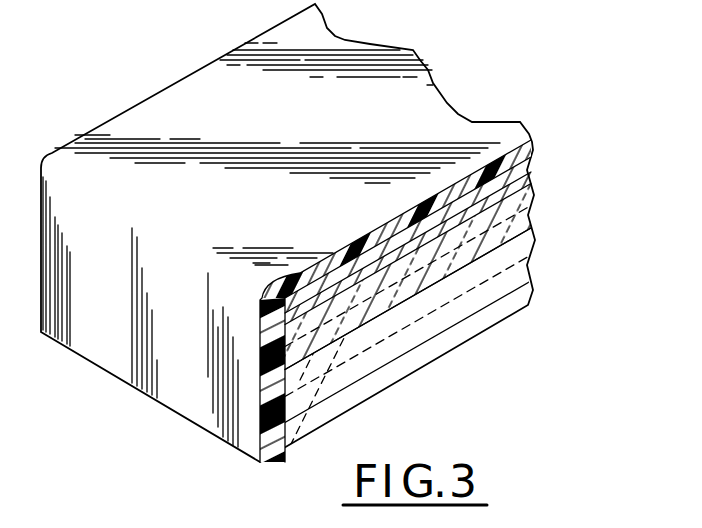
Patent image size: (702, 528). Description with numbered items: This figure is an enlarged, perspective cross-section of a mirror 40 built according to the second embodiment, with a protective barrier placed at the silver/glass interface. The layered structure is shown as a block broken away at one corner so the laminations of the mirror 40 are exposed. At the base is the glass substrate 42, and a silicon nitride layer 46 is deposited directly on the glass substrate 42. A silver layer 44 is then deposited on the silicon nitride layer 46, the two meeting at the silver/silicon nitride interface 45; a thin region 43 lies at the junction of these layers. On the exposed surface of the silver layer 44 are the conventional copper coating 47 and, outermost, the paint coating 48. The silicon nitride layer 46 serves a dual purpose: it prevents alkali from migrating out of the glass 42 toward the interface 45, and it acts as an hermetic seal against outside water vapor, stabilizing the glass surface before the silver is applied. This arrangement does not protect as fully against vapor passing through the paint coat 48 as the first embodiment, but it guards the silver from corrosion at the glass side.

The laminated wall structure 40 is at (428, 66).
The paint coating 48 is at (525, 142).
The copper coating 47 is at (530, 166).
The silver layer 44 is at (532, 181).
The silver/silicon nitride interface 45 is at (532, 194).
The silicon nitride layer 46 is at (533, 209).
The adhesive layer 43 is at (533, 227).
The glass substrate 42 is at (533, 271).